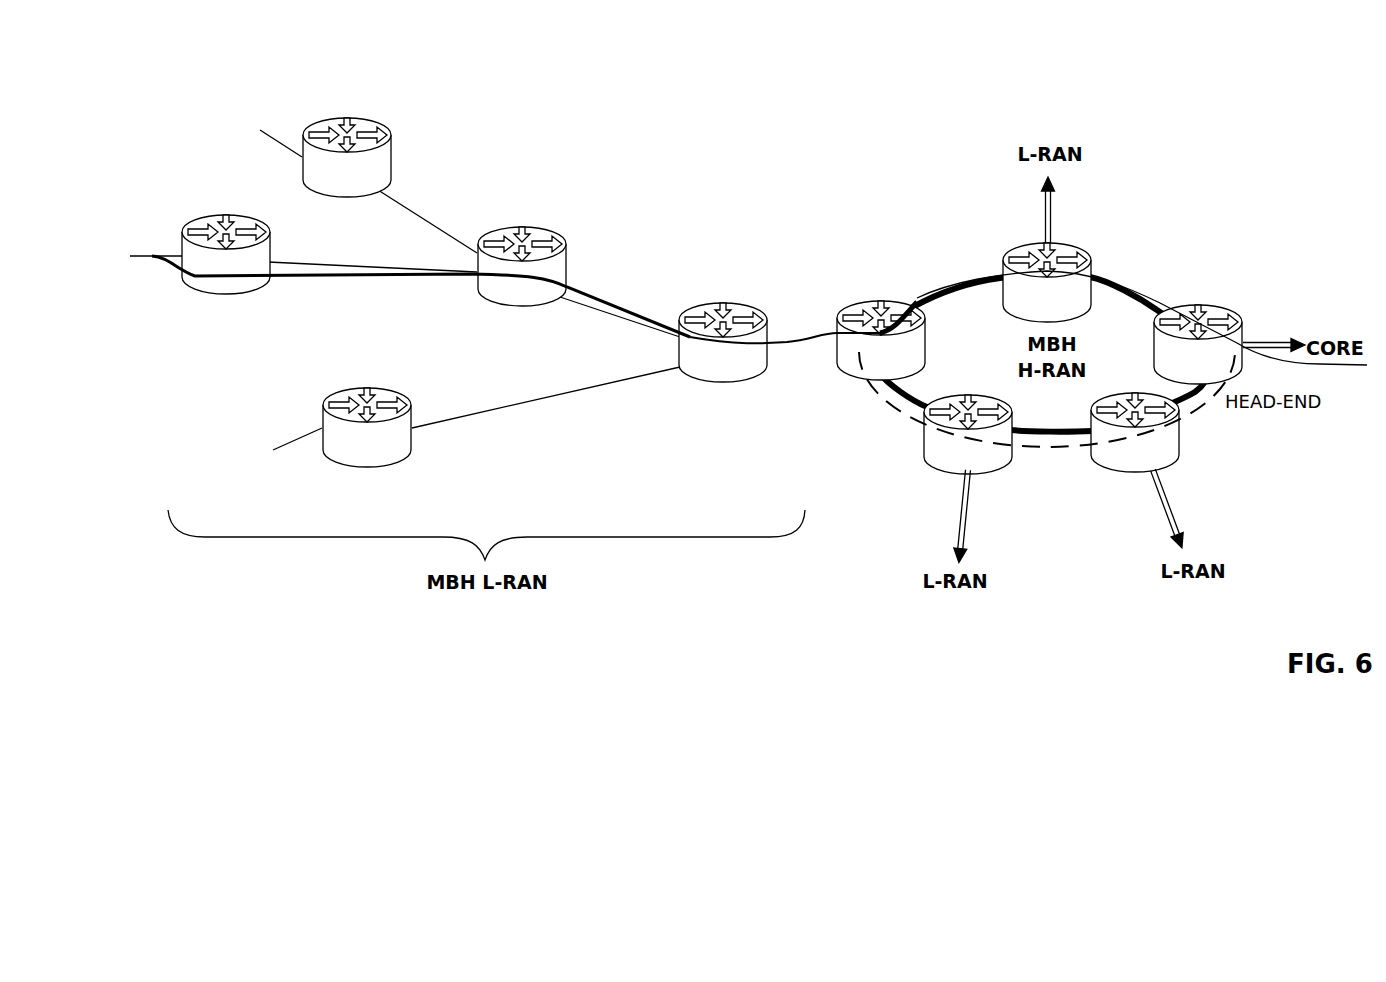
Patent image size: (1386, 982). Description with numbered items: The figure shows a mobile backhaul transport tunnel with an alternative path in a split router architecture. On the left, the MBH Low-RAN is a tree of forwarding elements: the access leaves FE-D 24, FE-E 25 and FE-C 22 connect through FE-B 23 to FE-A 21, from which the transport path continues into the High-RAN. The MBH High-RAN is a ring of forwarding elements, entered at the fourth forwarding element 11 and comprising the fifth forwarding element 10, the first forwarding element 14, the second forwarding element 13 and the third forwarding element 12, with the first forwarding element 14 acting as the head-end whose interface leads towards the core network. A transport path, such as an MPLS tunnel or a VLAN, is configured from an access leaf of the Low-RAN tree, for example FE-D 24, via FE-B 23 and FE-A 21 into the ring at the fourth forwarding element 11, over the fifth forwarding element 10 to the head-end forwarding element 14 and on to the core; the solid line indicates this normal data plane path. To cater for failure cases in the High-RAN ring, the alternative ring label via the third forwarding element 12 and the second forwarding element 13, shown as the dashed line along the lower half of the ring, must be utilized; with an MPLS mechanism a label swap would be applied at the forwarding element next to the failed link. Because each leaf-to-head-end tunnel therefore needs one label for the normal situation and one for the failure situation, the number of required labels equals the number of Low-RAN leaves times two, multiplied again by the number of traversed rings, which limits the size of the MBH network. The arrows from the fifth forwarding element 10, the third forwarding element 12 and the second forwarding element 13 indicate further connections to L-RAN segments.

The forwarding element 10 is at (1081, 245).
The forwarding element 11 is at (849, 305).
The forwarding element 12 is at (935, 467).
The forwarding element 13 is at (1099, 467).
The forwarding element 14 is at (1231, 308).
The forwarding element 21 is at (752, 303).
The forwarding element 22 is at (403, 393).
The forwarding element 23 is at (556, 230).
The forwarding element 24 is at (257, 218).
The forwarding element 25 is at (378, 120).